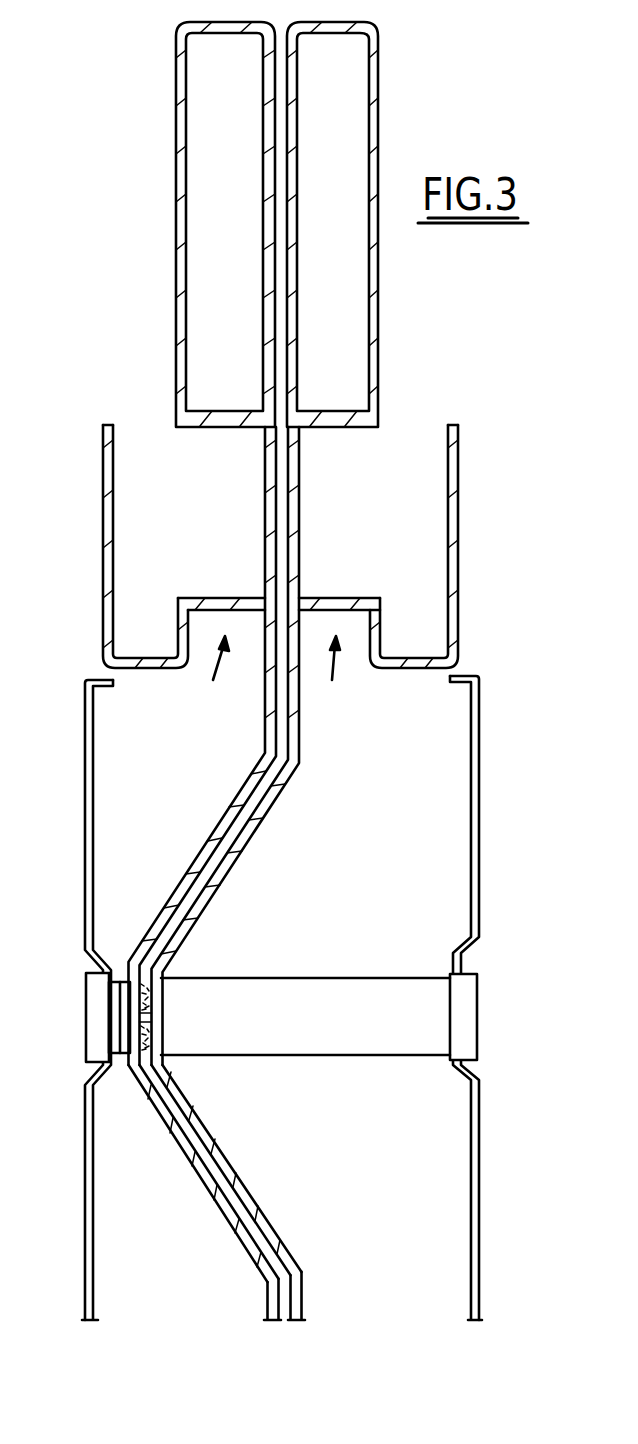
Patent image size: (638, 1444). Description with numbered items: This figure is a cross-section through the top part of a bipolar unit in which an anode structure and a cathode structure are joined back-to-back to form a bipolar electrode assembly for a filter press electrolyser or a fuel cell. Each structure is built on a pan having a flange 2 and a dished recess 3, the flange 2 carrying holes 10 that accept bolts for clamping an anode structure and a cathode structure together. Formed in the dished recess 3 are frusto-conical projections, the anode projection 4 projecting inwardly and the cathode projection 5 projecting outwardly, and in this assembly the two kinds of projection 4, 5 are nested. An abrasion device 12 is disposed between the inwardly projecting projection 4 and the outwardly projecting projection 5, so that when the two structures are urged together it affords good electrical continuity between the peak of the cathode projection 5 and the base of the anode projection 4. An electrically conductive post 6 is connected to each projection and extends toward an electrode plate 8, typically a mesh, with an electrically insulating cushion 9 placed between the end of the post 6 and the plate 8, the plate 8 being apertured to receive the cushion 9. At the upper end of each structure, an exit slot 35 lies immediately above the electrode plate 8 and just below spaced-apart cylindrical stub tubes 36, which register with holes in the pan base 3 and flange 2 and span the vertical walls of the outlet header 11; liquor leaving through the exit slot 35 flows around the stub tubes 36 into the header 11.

The flange 2 is at (103, 447).
The dished recess 3 is at (273, 1300).
The inwardly projecting frusto-conical projection 4 is at (240, 795).
The outwardly projecting frusto-conical projection 5 is at (222, 1158).
The electrically conductive post 6 is at (125, 983).
The electrode plate 8 is at (85, 718).
The electrically insulating cushion 9 is at (96, 1046).
The hole 10 is at (103, 503).
The outlet header 11 is at (233, 267).
The abrasion device 12 is at (150, 1000).
The exit slot 35 is at (213, 680).
The cylindrical stub tube 36 is at (213, 598).